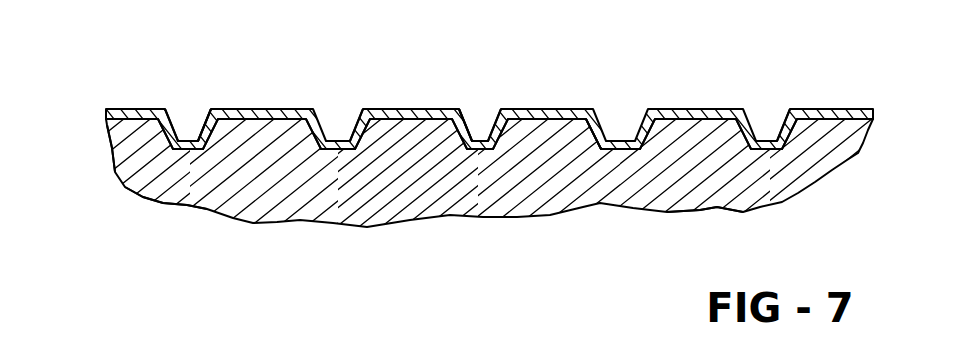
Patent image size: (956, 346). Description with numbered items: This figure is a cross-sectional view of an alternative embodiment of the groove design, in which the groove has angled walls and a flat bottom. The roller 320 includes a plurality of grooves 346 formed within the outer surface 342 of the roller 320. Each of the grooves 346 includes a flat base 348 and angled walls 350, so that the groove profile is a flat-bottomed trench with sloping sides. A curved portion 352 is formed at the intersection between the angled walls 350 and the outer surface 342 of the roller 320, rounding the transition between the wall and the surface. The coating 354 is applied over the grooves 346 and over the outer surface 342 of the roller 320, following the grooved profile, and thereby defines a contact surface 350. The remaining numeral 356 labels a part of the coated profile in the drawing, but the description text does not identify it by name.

The roller 320 is at (297, 198).
The outer surface 342 is at (112, 133).
The grooves 346 is at (191, 147).
The flat base 348 is at (173, 198).
The angled walls 350 is at (208, 131).
The curved portion 352 is at (366, 120).
The coating 354 is at (400, 112).
The top surface 356 is at (667, 110).